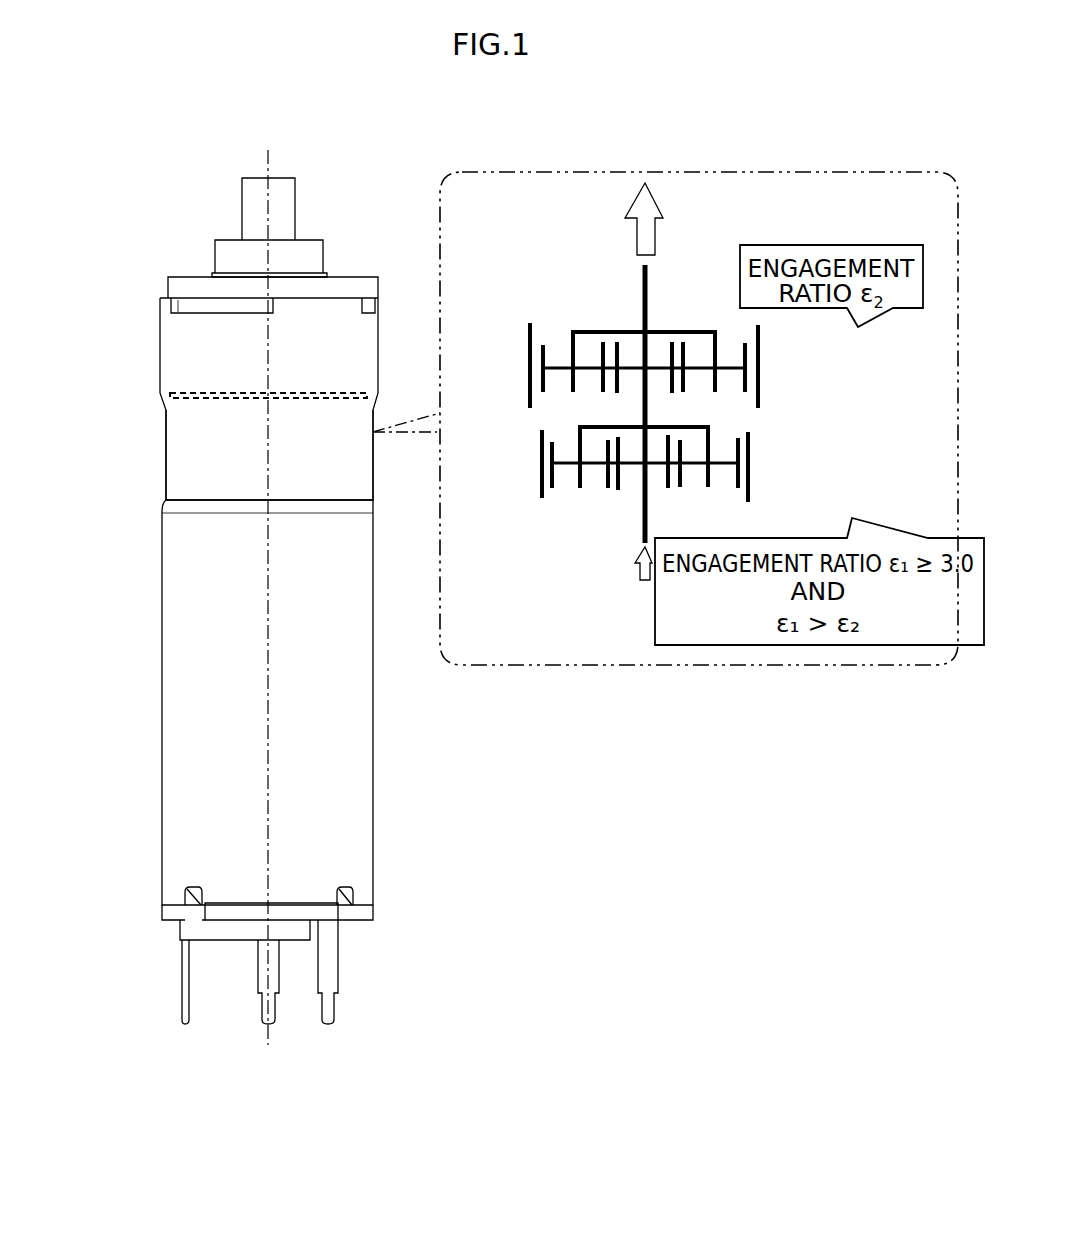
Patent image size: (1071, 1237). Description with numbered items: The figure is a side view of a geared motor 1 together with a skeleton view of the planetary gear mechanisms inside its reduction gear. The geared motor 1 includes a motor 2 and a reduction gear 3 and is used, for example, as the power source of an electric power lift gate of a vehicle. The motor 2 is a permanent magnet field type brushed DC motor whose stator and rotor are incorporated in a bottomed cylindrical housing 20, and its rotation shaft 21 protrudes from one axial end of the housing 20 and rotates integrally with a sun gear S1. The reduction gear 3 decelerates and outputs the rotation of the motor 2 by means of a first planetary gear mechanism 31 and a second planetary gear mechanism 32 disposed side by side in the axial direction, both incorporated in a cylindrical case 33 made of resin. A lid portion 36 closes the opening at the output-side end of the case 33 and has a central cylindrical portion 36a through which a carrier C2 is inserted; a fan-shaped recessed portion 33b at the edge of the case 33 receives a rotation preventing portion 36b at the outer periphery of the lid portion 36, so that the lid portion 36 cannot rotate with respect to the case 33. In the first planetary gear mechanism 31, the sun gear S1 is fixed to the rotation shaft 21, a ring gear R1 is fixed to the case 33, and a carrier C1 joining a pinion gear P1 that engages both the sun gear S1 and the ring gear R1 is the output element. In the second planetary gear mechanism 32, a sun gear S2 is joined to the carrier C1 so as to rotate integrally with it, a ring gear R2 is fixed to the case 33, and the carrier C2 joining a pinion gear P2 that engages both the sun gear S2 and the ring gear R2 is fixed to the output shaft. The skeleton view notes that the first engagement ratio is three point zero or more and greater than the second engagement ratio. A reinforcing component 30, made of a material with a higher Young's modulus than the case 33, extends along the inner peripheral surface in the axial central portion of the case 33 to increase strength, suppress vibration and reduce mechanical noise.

The geared motor 1 is at (122, 212).
The motor 2 is at (380, 789).
The reduction gear 3 is at (158, 445).
The housing 20 is at (173, 730).
The rotation shaft 21 is at (649, 520).
The reinforcing component 30 is at (170, 396).
The first planetary gear mechanism 31 is at (770, 489).
The second planetary gear mechanism 32 is at (775, 364).
The case 33 is at (167, 347).
The recessed portion 33b is at (195, 312).
The lid portion 36 is at (356, 272).
The cylindrical portion 36a is at (315, 253).
The rotation preventing portion 36b is at (177, 306).
The ring gear R1 is at (540, 489).
The pinion gear P1 is at (563, 466).
The sun gear S1 is at (627, 466).
The carrier C1 is at (710, 427).
The ring gear R2 is at (528, 338).
The pinion gear P2 is at (553, 363).
The sun gear S2 is at (633, 366).
The carrier C2 is at (610, 330).